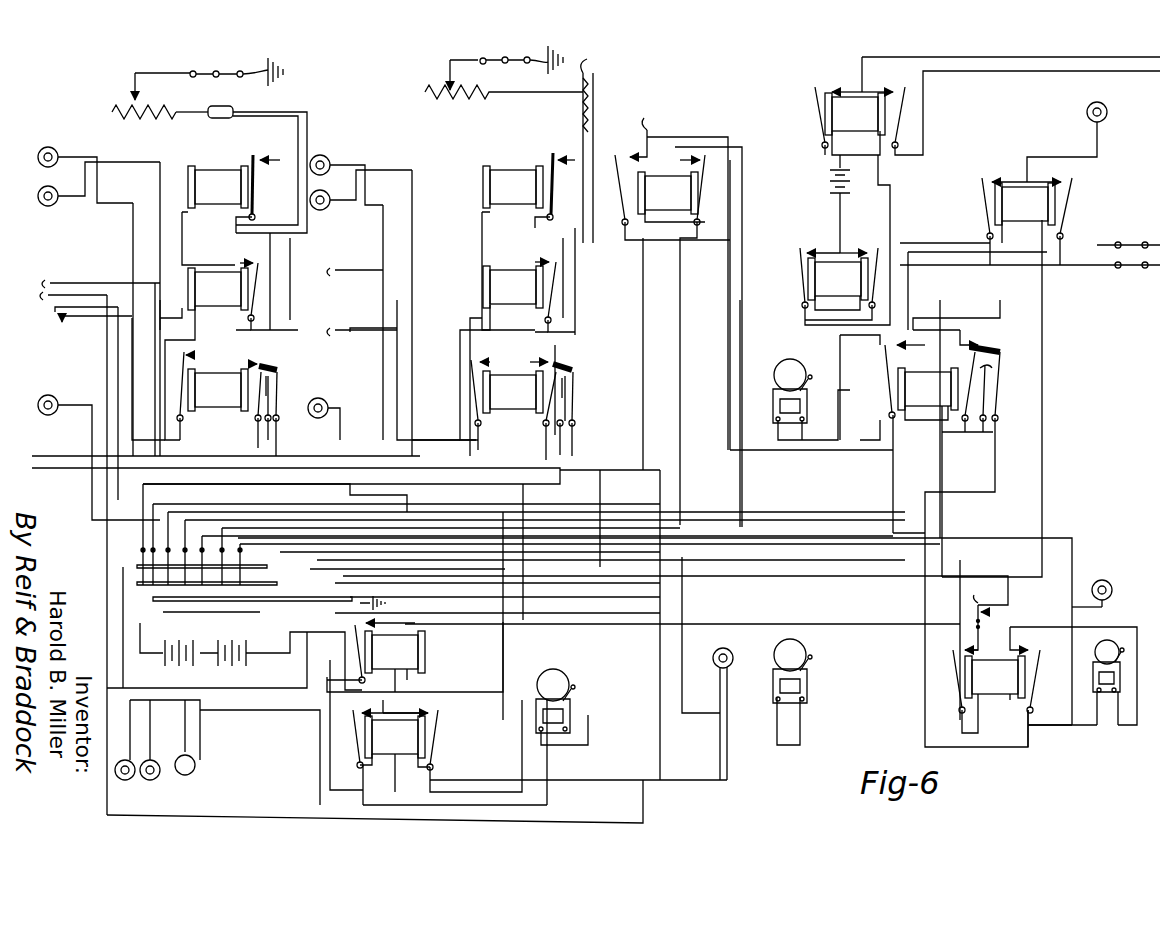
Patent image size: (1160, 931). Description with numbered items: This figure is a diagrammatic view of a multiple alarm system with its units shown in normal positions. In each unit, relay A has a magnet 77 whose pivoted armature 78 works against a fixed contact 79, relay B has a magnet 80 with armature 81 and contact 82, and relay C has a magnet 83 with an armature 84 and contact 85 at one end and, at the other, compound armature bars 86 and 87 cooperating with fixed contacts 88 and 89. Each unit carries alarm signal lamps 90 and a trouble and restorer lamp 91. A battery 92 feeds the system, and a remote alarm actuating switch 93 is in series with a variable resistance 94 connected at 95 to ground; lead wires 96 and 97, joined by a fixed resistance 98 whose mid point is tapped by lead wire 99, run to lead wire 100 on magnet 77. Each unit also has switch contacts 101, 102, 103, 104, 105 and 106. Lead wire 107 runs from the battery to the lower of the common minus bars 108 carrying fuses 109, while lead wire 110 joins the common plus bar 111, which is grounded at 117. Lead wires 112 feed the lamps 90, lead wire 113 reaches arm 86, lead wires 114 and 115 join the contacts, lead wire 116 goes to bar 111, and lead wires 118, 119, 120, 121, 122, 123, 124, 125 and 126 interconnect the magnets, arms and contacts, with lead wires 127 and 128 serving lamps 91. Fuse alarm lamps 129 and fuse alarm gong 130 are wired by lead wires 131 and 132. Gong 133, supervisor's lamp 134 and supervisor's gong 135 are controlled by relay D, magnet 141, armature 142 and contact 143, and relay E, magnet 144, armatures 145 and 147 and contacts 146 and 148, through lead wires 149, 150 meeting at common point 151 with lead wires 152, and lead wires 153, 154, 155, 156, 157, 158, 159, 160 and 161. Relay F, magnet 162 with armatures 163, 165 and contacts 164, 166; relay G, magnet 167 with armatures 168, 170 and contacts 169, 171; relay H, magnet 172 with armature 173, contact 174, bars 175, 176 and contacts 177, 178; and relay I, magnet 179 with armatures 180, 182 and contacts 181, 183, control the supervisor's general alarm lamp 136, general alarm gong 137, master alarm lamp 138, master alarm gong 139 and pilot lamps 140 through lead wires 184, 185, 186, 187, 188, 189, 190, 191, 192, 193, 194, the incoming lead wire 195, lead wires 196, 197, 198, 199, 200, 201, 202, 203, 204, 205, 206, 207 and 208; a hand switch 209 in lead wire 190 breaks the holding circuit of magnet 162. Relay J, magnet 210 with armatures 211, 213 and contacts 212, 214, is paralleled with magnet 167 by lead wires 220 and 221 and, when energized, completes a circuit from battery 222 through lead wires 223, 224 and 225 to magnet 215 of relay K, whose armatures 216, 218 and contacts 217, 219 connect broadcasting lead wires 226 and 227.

The magnet 77 is at (208, 172).
The pivoted armature 78 is at (256, 166).
The fixed contact 79 is at (417, 145).
The magnet 80 is at (365, 277).
The pivoted armature 81 is at (257, 282).
The fixed contact 82 is at (382, 262).
The magnet 83 is at (208, 380).
The pivoted armature 84 is at (188, 349).
The fixed contact 85 is at (329, 347).
The bar 86 is at (428, 351).
The bar 87 is at (280, 380).
The fixed contact 88 is at (394, 350).
The fixed contact 89 is at (270, 390).
The alarm signal lamps 90 is at (40, 165).
The trouble and restorer lamp 91 is at (174, 457).
The battery 92 is at (194, 664).
The alarm actuating switch 93 is at (222, 71).
The variable resistance 94 is at (120, 108).
The ground connection 95 is at (166, 72).
The lead wire 96 is at (236, 107).
The lead wire 97 is at (230, 119).
The fixed resistance 98 is at (570, 93).
The lead wire 99 is at (193, 112).
The lead wire 100 is at (236, 213).
The movable contact 101 is at (206, 267).
The fixed contact 102 is at (216, 257).
The fixed contact 103 is at (232, 528).
The movable contact 104 is at (201, 316).
The fixed contact 105 is at (229, 327).
The fixed contact 106 is at (55, 320).
The lead wire 107 is at (142, 624).
The common minus bars 108 is at (207, 544).
The fuses 109 is at (143, 560).
The lead wire 110 is at (211, 608).
The common plus bar 111 is at (170, 606).
The lead wires 112 is at (160, 185).
The lead wire 113 is at (133, 218).
The lead wires 114 is at (212, 338).
The lead wires 115 is at (297, 350).
The lead wire 116 is at (118, 348).
The ground 117 is at (388, 604).
The lead wire 118 is at (321, 380).
The lead wire 119 is at (182, 236).
The lead wire 120 is at (376, 439).
The lead wire 121 is at (498, 422).
The lead wire 122 is at (280, 362).
The lead wire 123 is at (85, 372).
The lead wire 124 is at (606, 298).
The lead wire 125 is at (300, 320).
The lead wire 126 is at (426, 281).
The lead wires 127 is at (107, 436).
The lead wires 128 is at (107, 360).
The fuse alarm lamps 129 is at (137, 784).
The fuse alarm gong 130 is at (196, 768).
The lead wire 131 is at (163, 724).
The lead wire 132 is at (345, 653).
The gong 133 is at (556, 670).
The supervisor's lamp 134 is at (720, 652).
The supervisor's gong 135 is at (800, 652).
The supervisor's general alarm lamp 136 is at (1100, 578).
The general alarm gong 137 is at (1103, 650).
The master alarm lamp 138 is at (1090, 112).
The master alarm gong 139 is at (790, 362).
The pilot lamps 140 is at (655, 120).
The magnet 141 is at (395, 661).
The pivoted armature 142 is at (356, 640).
The fixed contact 143 is at (393, 629).
The magnet 144 is at (395, 754).
The pivoted armature 145 is at (445, 720).
The fixed contact 146 is at (428, 710).
The pivoted armature 147 is at (352, 736).
The fixed contact 148 is at (394, 697).
The lead wire 149 is at (186, 534).
The lead wire 150 is at (107, 639).
The common point 151 is at (113, 494).
The lead wires 152 is at (107, 449).
The lead wire 153 is at (456, 626).
The lead wire 154 is at (332, 751).
The lead wire 155 is at (468, 812).
The lead wire 156 is at (395, 704).
The lead wire 157 is at (363, 804).
The lead wire 158 is at (660, 693).
The lead wire 159 is at (459, 780).
The lead wire 160 is at (683, 664).
The lead wire 161 is at (207, 816).
The magnet 162 is at (1017, 701).
The pivoted armature 163 is at (1034, 684).
The fixed contact 164 is at (1026, 638).
The pivoted armature 165 is at (956, 668).
The fixed contact 166 is at (962, 636).
The magnet 167 is at (1025, 224).
The pivoted armature 168 is at (1068, 196).
The fixed contact 169 is at (1062, 178).
The pivoted armature 170 is at (986, 200).
The fixed contact 171 is at (995, 168).
The magnet 172 is at (925, 472).
The pivoted armature 173 is at (885, 375).
The fixed contact 174 is at (917, 354).
The bar 175 is at (988, 335).
The bar 176 is at (1002, 364).
The fixed contact 177 is at (959, 331).
The fixed contact 178 is at (990, 385).
The magnet 179 is at (677, 348).
The pivoted armature 180 is at (712, 163).
The fixed contact 181 is at (677, 165).
The pivoted armature 182 is at (620, 220).
The fixed contact 183 is at (629, 142).
The lead wire 184 is at (1072, 588).
The lead wire 185 is at (995, 483).
The lead wire 186 is at (942, 430).
The lead wires 187 is at (1088, 737).
The lead wire 188 is at (1115, 608).
The lead wire 189 is at (962, 718).
The lead wire 190 is at (661, 605).
The lead wire 191 is at (1006, 749).
The lead wire 192 is at (903, 476).
The lead wire 193 is at (1000, 290).
The lead wire 194 is at (1044, 322).
The incoming 110 volt lead wire 195 is at (1126, 240).
The lead wire 196 is at (1050, 156).
The lead wire 197 is at (1062, 252).
The lead wire 198 is at (678, 260).
The lead wire 199 is at (458, 462).
The lead wires 200 is at (260, 474).
The lead wire 201 is at (656, 354).
The lead wire 202 is at (626, 121).
The lead wire 203 is at (728, 137).
The lead wire 204 is at (712, 243).
The lead wire 205 is at (742, 192).
The lead wire 206 is at (814, 431).
The lead wire 207 is at (859, 340).
The lead wire 208 is at (994, 433).
The hand switch 209 is at (963, 618).
The magnet 210 is at (838, 285).
The pivoted armature 211 is at (875, 202).
The fixed contact 212 is at (855, 241).
The pivoted armature 213 is at (798, 264).
The fixed contact 214 is at (821, 240).
The magnet 215 is at (992, 113).
The pivoted armature 216 is at (905, 105).
The fixed contact 217 is at (889, 86).
The pivoted armature 218 is at (820, 112).
The fixed contact 219 is at (835, 84).
The lead wire 220 is at (920, 244).
The lead wire 221 is at (924, 257).
The battery 222 is at (850, 191).
The lead wire 223 is at (836, 228).
The lead wire 224 is at (890, 244).
The lead wire 225 is at (832, 166).
The lead wire 226 is at (958, 60).
The lead wire 227 is at (1030, 82).